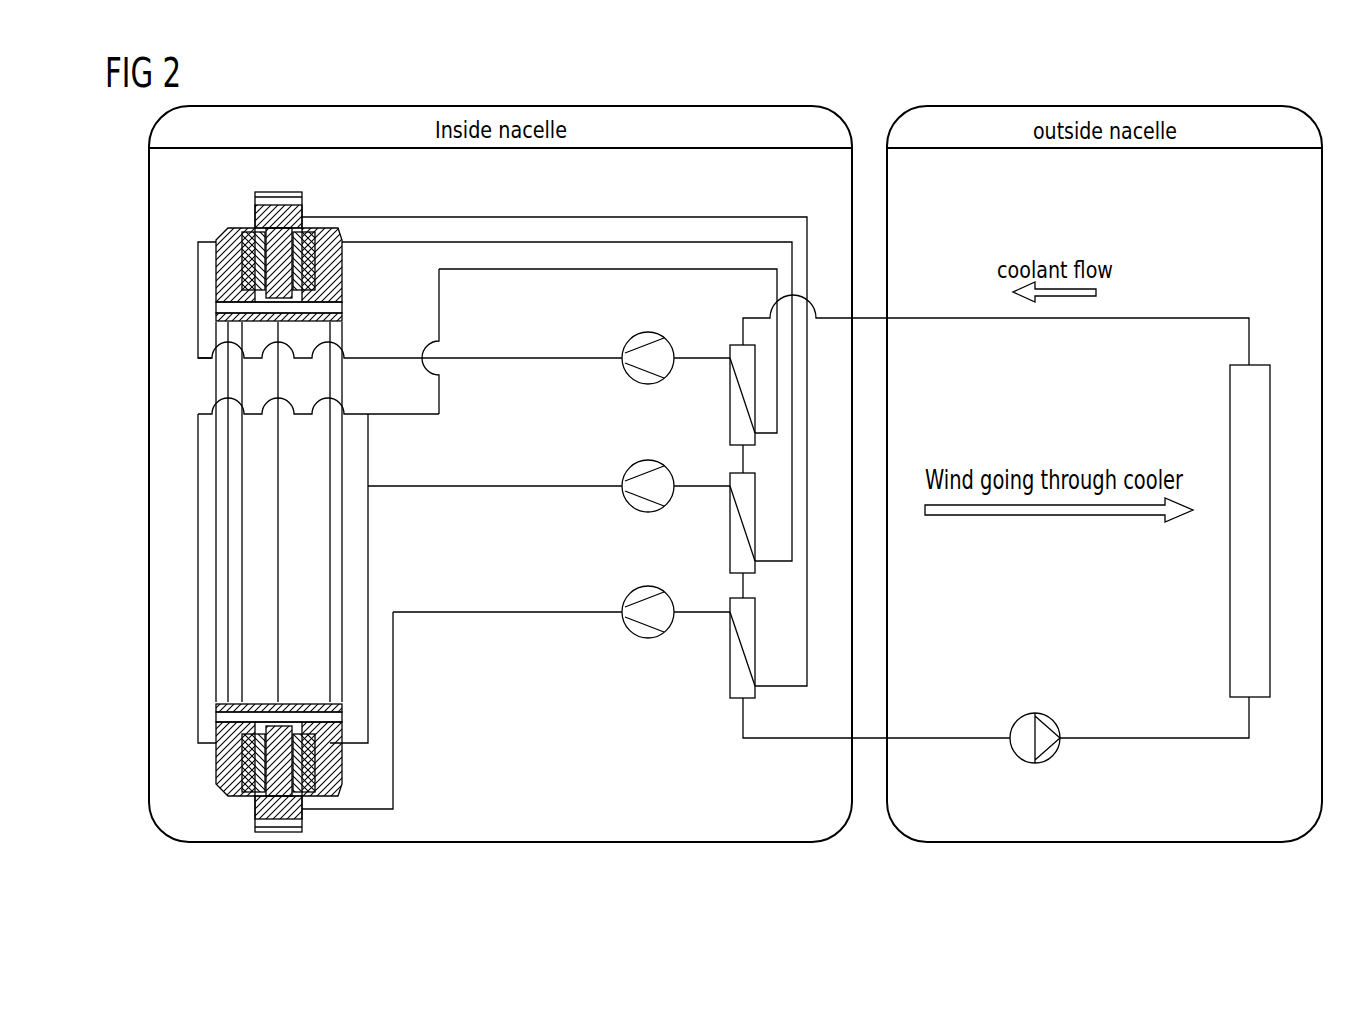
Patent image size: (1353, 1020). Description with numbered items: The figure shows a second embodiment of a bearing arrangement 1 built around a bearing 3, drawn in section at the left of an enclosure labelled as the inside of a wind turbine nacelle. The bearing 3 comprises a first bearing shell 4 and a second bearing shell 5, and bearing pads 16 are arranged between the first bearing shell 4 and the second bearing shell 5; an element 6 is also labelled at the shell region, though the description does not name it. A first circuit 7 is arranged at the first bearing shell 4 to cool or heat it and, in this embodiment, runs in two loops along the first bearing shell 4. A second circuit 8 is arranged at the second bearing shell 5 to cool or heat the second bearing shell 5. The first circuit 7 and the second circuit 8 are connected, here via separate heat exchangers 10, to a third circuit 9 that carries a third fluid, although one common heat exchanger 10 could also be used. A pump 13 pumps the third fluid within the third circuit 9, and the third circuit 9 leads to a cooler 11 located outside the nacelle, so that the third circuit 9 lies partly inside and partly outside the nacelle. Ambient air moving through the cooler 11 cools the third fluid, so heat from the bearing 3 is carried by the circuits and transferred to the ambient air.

The bearing arrangement 1 is at (178, 539).
The bearing 3 is at (248, 800).
The first bearing shell 4 is at (214, 278).
The second bearing shell 5 is at (264, 218).
The rotor housing 6 is at (222, 254).
The first circuit 7 is at (507, 360).
The second circuit 8 is at (367, 216).
The third circuit 9 is at (1210, 318).
The heat exchanger 10 is at (727, 412).
The cooler 11 is at (1230, 410).
The pump 13 is at (636, 338).
The bearing pads 16 is at (225, 262).